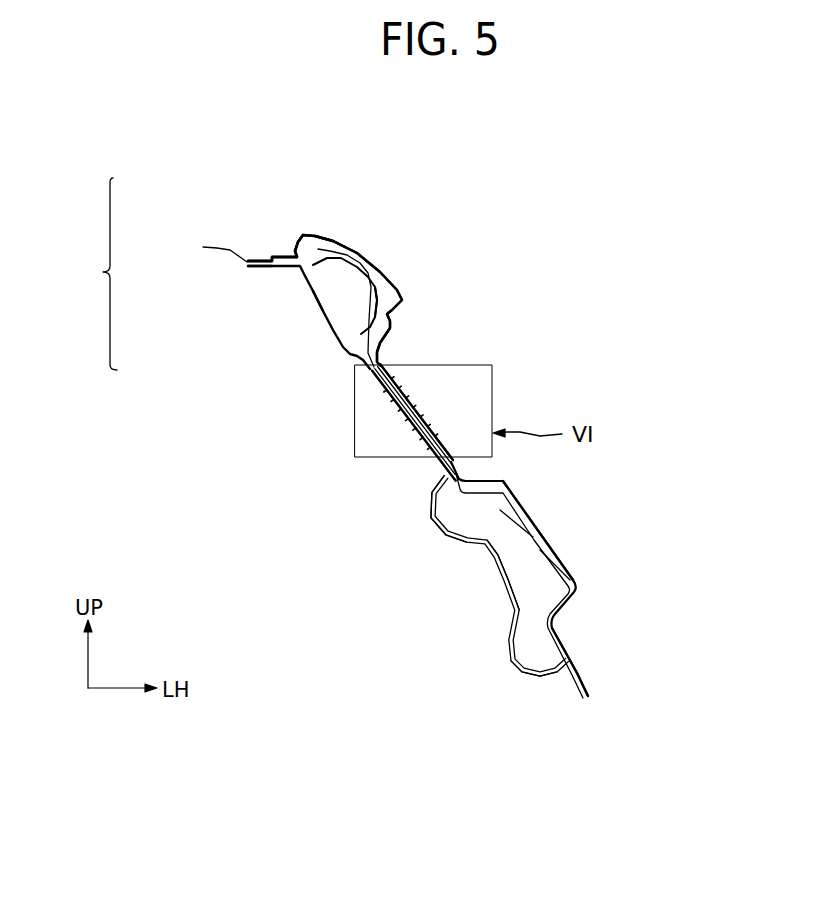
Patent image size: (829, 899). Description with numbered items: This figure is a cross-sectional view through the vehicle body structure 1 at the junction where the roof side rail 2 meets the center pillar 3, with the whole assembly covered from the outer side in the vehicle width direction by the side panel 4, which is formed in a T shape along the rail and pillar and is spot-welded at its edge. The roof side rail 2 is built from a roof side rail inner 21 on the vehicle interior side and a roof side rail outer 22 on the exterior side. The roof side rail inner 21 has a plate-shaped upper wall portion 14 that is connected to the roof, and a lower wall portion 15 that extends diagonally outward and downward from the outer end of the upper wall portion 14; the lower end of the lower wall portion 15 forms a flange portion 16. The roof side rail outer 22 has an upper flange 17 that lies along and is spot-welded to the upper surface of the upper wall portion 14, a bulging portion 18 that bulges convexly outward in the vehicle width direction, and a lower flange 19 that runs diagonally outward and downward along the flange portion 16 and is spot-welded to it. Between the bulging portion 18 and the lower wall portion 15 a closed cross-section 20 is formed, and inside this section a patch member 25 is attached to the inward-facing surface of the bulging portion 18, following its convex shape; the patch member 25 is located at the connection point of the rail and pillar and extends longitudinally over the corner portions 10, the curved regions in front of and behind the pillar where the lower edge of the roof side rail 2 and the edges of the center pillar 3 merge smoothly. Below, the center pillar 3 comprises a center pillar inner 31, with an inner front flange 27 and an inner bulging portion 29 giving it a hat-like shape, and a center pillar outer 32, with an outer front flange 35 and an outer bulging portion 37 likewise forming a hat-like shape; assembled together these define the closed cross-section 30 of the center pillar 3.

The vehicle body structure 1 is at (352, 218).
The roof side rail 2 is at (97, 274).
The center pillar 3 is at (500, 648).
The side panel 4 is at (390, 277).
The corner portion 10 is at (427, 400).
The upper wall portion 14 is at (247, 261).
The lower wall portion 15 is at (322, 300).
The flange portion 16 is at (377, 388).
The upper flange 17 is at (282, 253).
The bulging portion 18 is at (335, 252).
The lower flange 19 is at (390, 384).
The closed cross-section 20 is at (337, 283).
The roof side rail inner 21 is at (313, 303).
The roof side rail outer 22 is at (292, 250).
The patch member 25 is at (368, 298).
The inner front flange 27 is at (573, 683).
The inner bulging portion 29 is at (513, 667).
The closed cross-section 30 is at (513, 567).
The center pillar inner 31 is at (441, 530).
The center pillar outer 32 is at (497, 550).
The outer front flange 35 is at (570, 647).
The outer bulging portion 37 is at (572, 568).